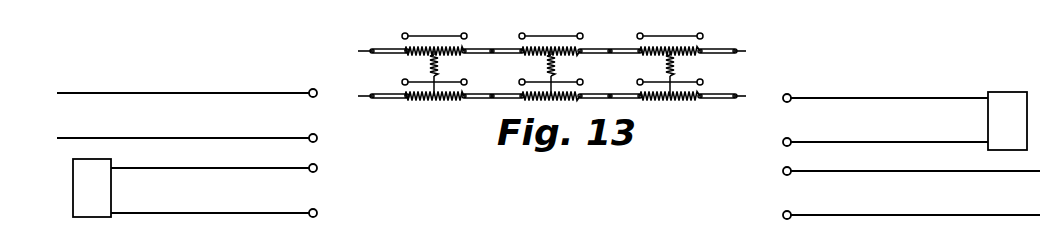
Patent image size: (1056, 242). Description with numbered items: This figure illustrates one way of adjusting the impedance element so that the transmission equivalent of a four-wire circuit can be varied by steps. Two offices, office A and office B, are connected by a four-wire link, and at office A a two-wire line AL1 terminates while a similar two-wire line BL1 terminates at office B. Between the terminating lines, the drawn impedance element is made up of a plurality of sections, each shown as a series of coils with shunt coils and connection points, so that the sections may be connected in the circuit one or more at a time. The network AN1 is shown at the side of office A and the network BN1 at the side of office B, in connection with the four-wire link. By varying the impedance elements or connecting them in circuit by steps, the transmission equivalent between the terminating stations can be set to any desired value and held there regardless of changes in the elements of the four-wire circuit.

The office A is at (187, 130).
The office B is at (911, 135).
The two-wire line AL1 is at (81, 93).
The network AN1 at station A AN1 is at (92, 188).
The network BN1 at station B BN1 is at (1007, 121).
The two-wire line BL1 is at (1025, 172).